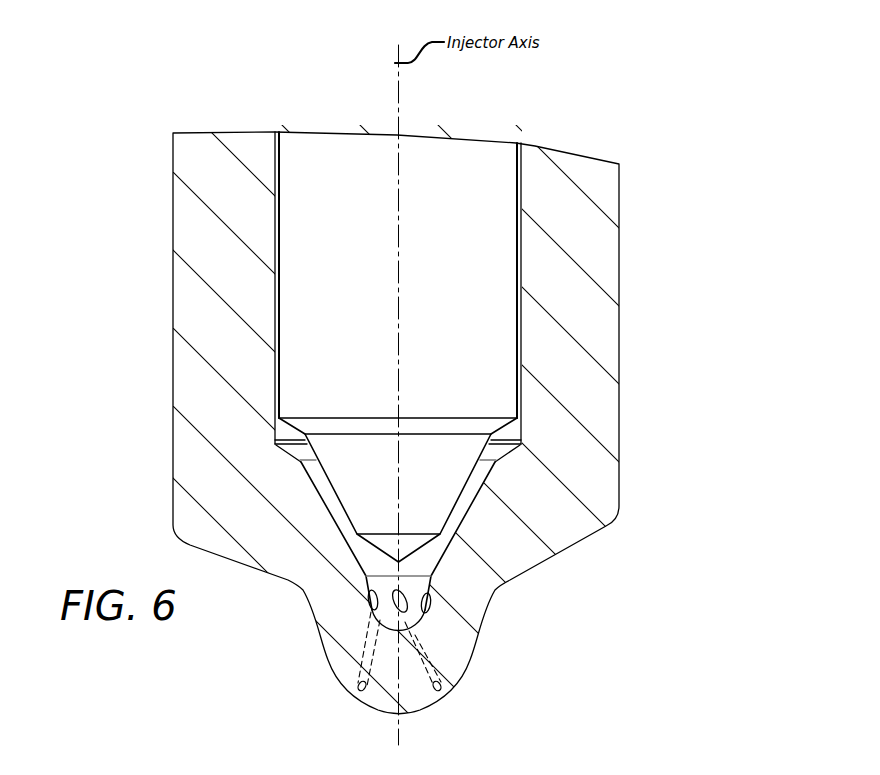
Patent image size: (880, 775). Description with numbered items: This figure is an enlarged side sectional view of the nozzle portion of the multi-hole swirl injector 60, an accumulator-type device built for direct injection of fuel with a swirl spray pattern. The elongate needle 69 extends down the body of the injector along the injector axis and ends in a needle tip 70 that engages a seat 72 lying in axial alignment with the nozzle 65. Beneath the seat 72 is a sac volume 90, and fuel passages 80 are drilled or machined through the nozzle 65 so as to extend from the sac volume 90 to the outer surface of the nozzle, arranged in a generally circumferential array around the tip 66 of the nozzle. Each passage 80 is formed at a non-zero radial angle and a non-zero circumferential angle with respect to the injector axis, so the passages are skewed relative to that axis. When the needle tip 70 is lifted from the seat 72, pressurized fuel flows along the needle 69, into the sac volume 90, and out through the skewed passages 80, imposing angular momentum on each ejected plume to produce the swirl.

The multi-hole swirl injector 60 is at (619, 280).
The needle 69 is at (493, 340).
The needle tip 70 is at (384, 545).
The seat 72 is at (423, 562).
The sac volume 90 is at (386, 606).
The fuel passages 80 is at (362, 690).
The nozzle 65 is at (540, 565).
The nozzle tip 66 is at (327, 652).